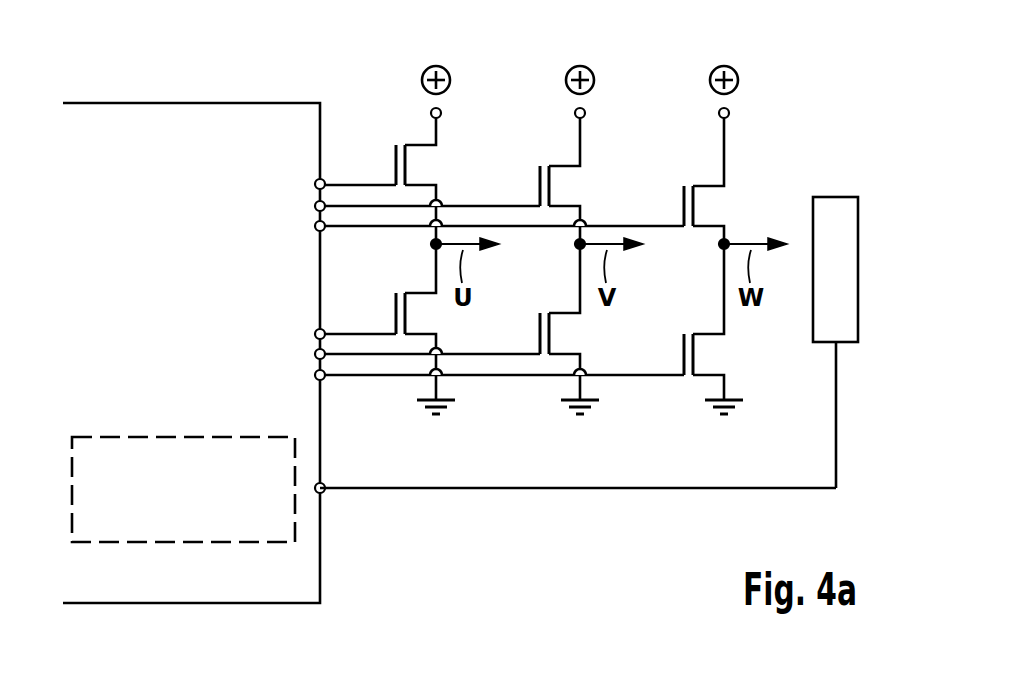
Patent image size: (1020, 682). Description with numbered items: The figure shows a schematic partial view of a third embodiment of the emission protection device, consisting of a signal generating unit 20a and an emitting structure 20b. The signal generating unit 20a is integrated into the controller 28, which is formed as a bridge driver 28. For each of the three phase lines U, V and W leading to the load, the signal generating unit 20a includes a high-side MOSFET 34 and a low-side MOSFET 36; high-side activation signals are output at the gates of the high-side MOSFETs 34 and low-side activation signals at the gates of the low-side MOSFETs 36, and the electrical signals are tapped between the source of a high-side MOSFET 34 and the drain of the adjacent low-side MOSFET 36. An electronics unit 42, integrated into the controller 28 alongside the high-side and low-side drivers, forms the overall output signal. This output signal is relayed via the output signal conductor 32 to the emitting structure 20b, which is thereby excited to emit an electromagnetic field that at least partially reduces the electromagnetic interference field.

The signal generating unit 20a is at (762, 47).
The emitting structure 20b is at (835, 197).
The controller 28 is at (197, 103).
The output signal conductor 32 is at (637, 490).
The high-side MOSFET 34 is at (393, 157).
The low-side MOSFET 36 is at (393, 305).
The electronics unit 42 is at (195, 437).